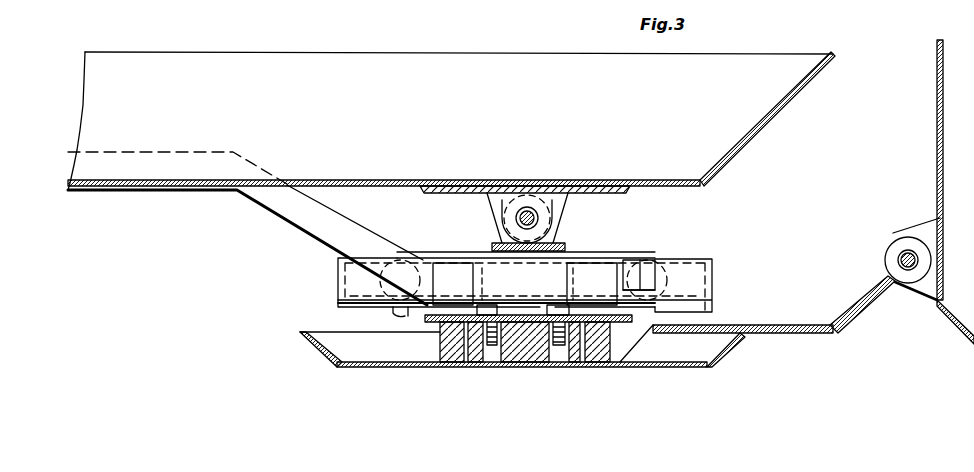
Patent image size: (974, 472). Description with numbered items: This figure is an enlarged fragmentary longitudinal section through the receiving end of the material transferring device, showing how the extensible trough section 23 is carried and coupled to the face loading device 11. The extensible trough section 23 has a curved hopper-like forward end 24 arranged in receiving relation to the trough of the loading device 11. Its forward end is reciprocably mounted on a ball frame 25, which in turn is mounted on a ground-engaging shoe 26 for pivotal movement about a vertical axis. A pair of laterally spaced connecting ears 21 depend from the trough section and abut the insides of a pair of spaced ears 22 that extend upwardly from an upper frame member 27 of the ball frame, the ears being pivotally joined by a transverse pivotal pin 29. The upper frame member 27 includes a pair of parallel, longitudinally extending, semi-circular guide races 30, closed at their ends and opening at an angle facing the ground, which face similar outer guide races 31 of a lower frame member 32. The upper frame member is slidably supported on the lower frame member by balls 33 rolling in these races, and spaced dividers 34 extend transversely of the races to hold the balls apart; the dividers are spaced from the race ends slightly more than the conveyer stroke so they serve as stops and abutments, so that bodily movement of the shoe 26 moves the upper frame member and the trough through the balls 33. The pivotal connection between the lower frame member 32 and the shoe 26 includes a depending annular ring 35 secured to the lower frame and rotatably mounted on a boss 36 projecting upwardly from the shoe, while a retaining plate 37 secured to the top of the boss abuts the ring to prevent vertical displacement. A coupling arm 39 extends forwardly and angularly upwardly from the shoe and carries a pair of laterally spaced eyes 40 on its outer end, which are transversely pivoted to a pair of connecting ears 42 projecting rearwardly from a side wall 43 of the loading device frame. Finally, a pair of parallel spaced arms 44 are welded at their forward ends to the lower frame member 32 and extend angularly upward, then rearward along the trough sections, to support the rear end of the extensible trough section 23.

The face loading device 11 is at (958, 338).
The connecting ears 21 is at (492, 206).
The spaced ears 22 is at (560, 226).
The extensible trough section 23 is at (162, 52).
The curved hopper-like forward end 24 is at (785, 52).
The ball frame 25 is at (712, 258).
The ground-engaging shoe 26 is at (730, 350).
The upper frame member 27 is at (493, 252).
The transverse pivotal pin 29 is at (533, 210).
The guide races 30 is at (680, 258).
The outer guide races 31 is at (712, 311).
The lower frame member 32 is at (393, 313).
The balls 33 is at (653, 272).
The dividers 34 is at (580, 285).
The depending annular ring 35 is at (440, 342).
The boss 36 is at (612, 340).
The retaining plate 37 is at (530, 302).
The coupling arm 39 is at (865, 312).
The eyes 40 is at (905, 237).
The connecting ears 42 is at (925, 224).
The side wall 43 is at (937, 177).
The arms 44 is at (319, 238).